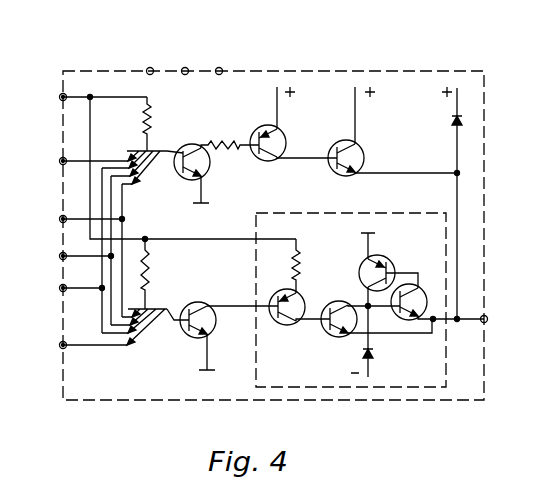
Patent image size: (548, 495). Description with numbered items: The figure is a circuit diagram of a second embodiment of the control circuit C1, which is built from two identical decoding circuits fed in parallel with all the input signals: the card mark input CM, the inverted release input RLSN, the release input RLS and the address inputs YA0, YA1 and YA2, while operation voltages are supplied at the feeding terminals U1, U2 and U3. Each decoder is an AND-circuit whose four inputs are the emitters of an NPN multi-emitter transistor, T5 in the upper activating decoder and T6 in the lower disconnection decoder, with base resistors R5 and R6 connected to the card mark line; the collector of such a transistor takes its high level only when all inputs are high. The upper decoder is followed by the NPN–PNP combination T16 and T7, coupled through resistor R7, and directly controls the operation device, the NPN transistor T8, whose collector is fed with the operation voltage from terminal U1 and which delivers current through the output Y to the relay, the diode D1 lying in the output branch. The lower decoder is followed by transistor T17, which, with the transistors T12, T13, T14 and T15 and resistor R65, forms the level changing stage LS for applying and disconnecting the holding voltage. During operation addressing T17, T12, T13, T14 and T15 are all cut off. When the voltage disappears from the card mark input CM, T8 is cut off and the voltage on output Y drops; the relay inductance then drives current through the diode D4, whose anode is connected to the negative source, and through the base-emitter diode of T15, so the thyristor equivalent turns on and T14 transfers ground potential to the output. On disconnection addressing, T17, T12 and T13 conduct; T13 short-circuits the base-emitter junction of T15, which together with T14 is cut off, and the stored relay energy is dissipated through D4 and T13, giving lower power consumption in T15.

The resistor R5 is at (149, 118).
The resistor R6 is at (147, 268).
The resistor R7 is at (224, 141).
The resistor R65 is at (299, 262).
The multi-emitter transistor T5 is at (140, 186).
The multi-emitter transistor T6 is at (133, 345).
The PNP transistor T7 is at (284, 139).
The NPN transistor T8 is at (364, 148).
The transistor T12 is at (283, 325).
The transistor T13 is at (334, 337).
The transistor T14 is at (392, 262).
The transistor T15 is at (421, 290).
The NPN transistor T16 is at (211, 170).
The transistor T17 is at (213, 329).
The diode D1 is at (453, 121).
The diode D4 is at (372, 353).
The level changing stage LS is at (333, 387).
The control circuit C1 is at (452, 46).
The card mark input CM is at (59, 97).
The inverted RLS input terminal RLSN is at (44, 151).
The RLS input terminal RLS is at (59, 345).
The address input terminal YA0 is at (59, 219).
The address input terminal YA1 is at (59, 256).
The address input terminal YA2 is at (59, 288).
The voltage feeding terminal U1 is at (152, 67).
The supply terminal U2 is at (187, 67).
The supply terminal U3 is at (221, 67).
The output Y is at (493, 321).